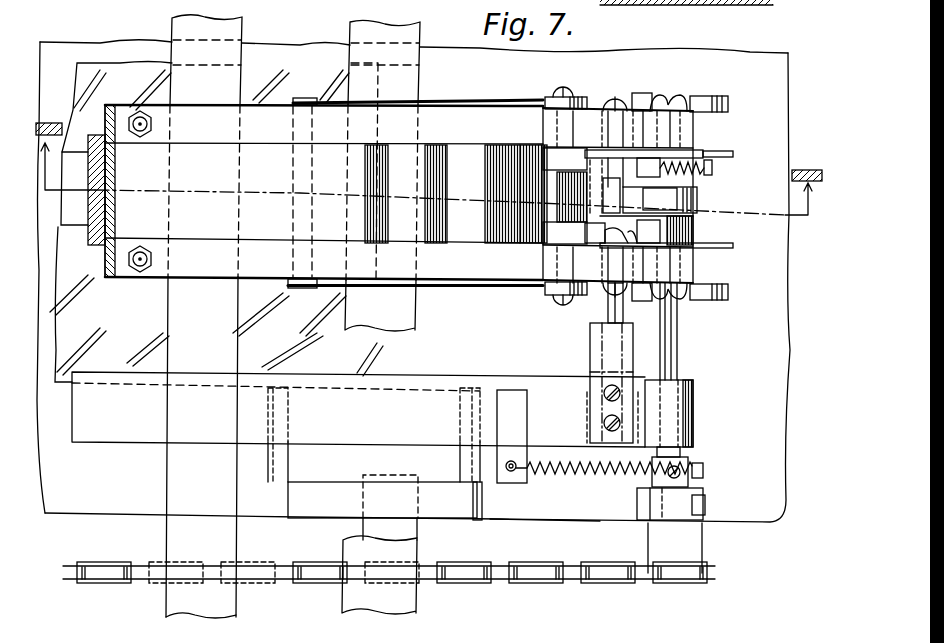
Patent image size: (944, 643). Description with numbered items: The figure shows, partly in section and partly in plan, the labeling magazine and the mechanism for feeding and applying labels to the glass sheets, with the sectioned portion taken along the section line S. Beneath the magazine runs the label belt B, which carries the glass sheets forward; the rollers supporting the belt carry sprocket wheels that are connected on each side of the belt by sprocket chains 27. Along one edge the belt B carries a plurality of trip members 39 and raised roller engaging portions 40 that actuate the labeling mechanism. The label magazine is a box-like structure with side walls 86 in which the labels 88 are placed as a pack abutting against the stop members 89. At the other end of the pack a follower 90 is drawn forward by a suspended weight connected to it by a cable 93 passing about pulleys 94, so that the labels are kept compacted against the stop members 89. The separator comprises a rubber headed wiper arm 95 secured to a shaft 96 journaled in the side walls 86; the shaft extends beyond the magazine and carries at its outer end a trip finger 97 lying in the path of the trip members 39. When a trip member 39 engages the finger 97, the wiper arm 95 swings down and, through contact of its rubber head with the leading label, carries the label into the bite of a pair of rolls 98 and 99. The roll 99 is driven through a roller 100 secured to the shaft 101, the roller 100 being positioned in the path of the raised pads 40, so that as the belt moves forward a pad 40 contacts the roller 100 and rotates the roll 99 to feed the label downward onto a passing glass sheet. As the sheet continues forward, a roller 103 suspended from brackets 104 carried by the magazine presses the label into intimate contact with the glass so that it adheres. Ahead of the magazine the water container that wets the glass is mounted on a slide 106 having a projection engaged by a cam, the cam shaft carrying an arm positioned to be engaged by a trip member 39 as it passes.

The section line S is at (108, 72).
The label belt B is at (540, 513).
The sprocket chains 27 is at (300, 585).
The trip members 39 is at (478, 505).
The raised roller engaging portions 40 is at (340, 467).
The side walls 86 is at (207, 116).
The labels 88 is at (513, 160).
The stop members 89 is at (563, 157).
The follower 90 is at (253, 168).
The cable 93 is at (451, 102).
The pulleys 94 is at (548, 96).
The wiper arm 95 is at (694, 196).
The shaft 96 is at (678, 347).
The finger 97 is at (646, 504).
The roll 98 is at (547, 203).
The roll 99 is at (623, 148).
The roller 100 is at (590, 480).
The shaft 101 is at (606, 318).
The roller 103 is at (694, 228).
The brackets 104 is at (690, 101).
The slide 106 is at (75, 247).